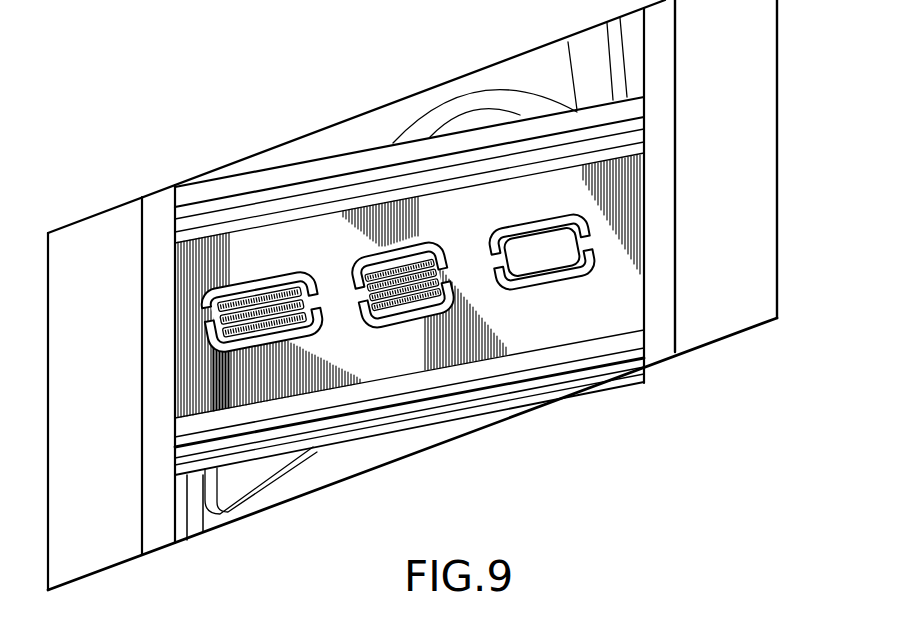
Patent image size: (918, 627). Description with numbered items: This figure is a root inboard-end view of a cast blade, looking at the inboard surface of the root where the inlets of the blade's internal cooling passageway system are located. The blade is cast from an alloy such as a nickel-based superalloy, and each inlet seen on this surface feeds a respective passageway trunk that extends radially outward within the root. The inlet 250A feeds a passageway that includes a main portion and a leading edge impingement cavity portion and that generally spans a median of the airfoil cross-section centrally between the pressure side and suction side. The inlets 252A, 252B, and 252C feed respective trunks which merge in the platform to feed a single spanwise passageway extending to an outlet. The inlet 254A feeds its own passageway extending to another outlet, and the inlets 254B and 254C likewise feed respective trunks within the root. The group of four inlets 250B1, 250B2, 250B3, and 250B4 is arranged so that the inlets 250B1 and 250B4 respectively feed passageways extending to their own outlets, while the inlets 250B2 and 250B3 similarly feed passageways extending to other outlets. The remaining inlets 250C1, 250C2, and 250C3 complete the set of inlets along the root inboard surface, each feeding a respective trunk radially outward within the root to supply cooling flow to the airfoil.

The inlet 254A is at (554, 222).
The inlet 254B is at (371, 252).
The inlet 254C is at (267, 272).
The inlet 250A is at (553, 250).
The inlet 250B1 is at (420, 306).
The inlet 250B2 is at (433, 288).
The inlet 250B3 is at (421, 265).
The inlet 250B4 is at (409, 258).
The inlet 250C1 is at (235, 335).
The inlet 250C2 is at (217, 322).
The inlet 250C3 is at (250, 297).
The inlet 252A is at (588, 279).
The inlet 252B is at (398, 328).
The inlet 252C is at (278, 342).